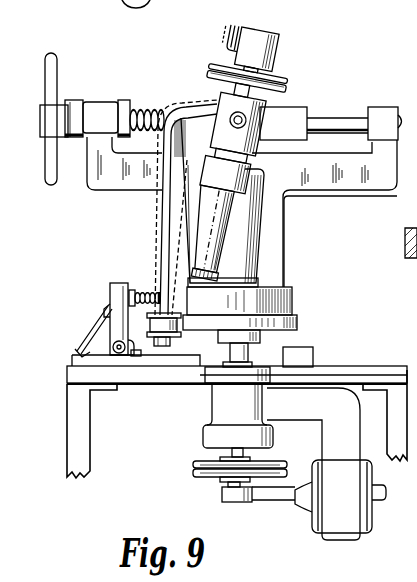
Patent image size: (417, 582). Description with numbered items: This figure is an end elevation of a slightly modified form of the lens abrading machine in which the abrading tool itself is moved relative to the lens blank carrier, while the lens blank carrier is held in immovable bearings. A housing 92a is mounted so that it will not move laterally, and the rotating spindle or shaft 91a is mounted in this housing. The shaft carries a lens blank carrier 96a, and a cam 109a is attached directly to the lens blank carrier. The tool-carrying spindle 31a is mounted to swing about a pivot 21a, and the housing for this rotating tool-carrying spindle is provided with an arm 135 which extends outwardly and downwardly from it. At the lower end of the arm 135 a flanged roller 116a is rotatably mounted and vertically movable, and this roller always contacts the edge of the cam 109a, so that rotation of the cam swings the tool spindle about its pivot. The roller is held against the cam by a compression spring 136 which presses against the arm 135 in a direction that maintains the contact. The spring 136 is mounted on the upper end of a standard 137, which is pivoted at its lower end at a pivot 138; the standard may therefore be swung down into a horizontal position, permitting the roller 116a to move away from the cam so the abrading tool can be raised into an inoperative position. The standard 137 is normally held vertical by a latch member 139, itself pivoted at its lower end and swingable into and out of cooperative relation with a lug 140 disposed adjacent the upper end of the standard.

The pivot 21a is at (232, 116).
The tool-carrying spindle 31a is at (205, 226).
The lens blank carrier 96a is at (278, 301).
The cam 109a is at (294, 326).
The rotating spindle or shaft 91a is at (248, 352).
The housing 92a is at (224, 409).
The flanged roller 116a is at (158, 323).
The arm 135 is at (162, 210).
The compression spring 136 is at (148, 292).
The standard 137 is at (118, 297).
The pivot 138 is at (121, 353).
The latch member 139 is at (100, 322).
The lug 140 is at (107, 309).